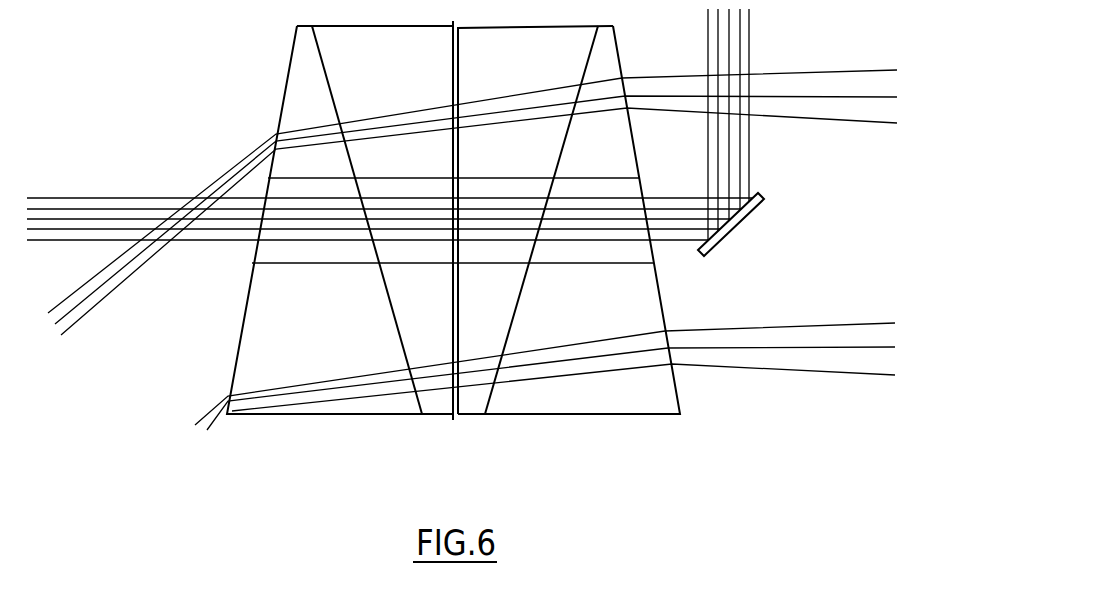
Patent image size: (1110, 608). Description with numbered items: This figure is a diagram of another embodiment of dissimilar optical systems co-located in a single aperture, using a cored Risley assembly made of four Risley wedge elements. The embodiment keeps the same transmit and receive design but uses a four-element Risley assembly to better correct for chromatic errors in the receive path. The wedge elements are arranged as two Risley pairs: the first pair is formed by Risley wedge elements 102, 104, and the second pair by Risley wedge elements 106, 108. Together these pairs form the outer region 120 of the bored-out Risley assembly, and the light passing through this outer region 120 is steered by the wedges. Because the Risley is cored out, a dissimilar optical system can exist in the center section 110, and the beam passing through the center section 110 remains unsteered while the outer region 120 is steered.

The Risley wedge element 102 is at (334, 304).
The Risley wedge element 104 is at (412, 76).
The Risley wedge element 106 is at (527, 76).
The Risley wedge element 108 is at (600, 304).
The center section 110 is at (100, 224).
The outer region 120 is at (252, 148).